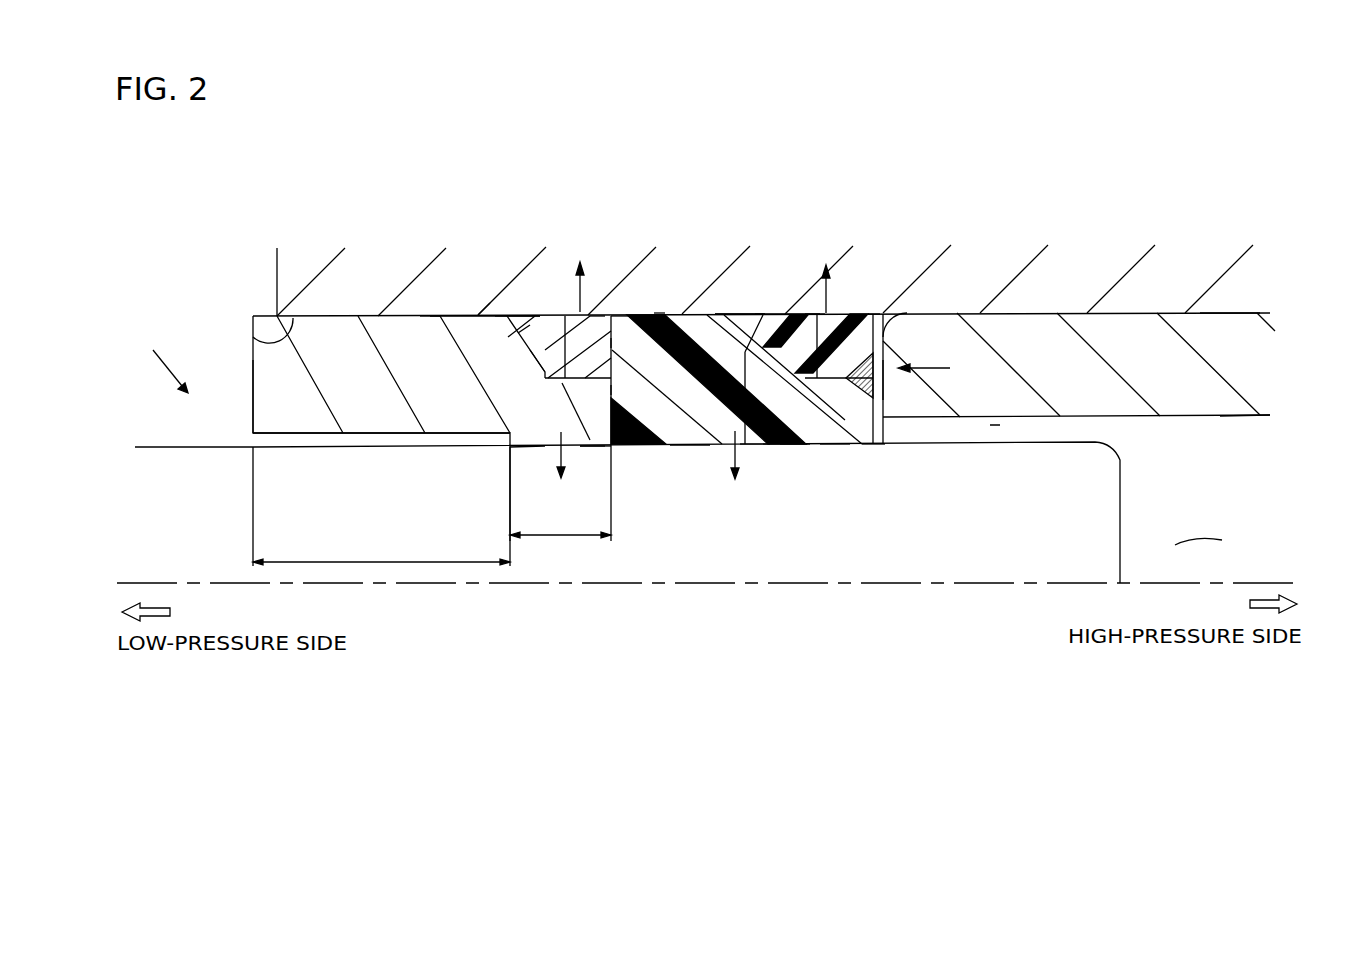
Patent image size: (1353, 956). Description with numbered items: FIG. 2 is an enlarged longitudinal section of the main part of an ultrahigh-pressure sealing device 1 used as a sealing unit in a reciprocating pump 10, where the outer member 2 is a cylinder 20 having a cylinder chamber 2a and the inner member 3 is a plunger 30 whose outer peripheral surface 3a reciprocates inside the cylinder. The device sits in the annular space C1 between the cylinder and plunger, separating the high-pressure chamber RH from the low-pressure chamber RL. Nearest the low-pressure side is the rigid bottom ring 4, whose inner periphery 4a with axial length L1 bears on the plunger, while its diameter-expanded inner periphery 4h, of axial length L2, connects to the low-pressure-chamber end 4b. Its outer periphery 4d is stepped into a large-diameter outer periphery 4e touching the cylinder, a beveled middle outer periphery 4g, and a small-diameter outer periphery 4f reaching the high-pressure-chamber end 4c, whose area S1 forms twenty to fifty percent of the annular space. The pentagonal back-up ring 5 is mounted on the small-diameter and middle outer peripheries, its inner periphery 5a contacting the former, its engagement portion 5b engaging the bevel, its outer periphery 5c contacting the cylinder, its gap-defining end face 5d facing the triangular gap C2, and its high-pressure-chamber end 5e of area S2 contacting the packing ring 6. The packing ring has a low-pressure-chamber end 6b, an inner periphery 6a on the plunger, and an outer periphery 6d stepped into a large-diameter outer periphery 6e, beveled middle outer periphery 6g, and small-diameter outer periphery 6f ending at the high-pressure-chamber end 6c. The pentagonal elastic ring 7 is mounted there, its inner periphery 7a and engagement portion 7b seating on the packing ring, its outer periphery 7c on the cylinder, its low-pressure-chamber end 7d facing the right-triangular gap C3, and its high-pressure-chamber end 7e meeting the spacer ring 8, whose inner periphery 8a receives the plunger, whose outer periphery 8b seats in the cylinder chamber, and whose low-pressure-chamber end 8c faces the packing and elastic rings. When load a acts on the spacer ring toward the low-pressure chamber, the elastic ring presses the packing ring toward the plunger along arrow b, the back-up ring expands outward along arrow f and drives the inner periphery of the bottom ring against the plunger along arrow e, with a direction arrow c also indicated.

The ultrahigh-pressure sealing device 1 is at (1138, 173).
The reciprocating pump 10 is at (1110, 199).
The outer member 2 is at (736, 280).
The cylinder 20 is at (274, 268).
The cylinder chamber 2a is at (252, 330).
The inner member 3 is at (708, 512).
The plunger 30 is at (1122, 494).
The outer peripheral surface 3a is at (153, 447).
The bottom ring 4 is at (340, 306).
The inner periphery 4a is at (533, 448).
The low-pressure-chamber end 4b is at (252, 367).
The high-pressure-chamber end 4c is at (630, 450).
The outer periphery 4d is at (533, 196).
The large-diameter outer periphery 4e is at (430, 313).
The small-diameter outer periphery 4f is at (502, 313).
The middle outer periphery 4g is at (528, 313).
The diameter-expanded inner periphery 4h is at (378, 436).
The back-up ring 5 is at (563, 305).
The inner periphery 5a is at (582, 380).
The engagement portion 5b is at (545, 373).
The outer periphery 5c is at (598, 313).
The gap-defining end face 5d is at (534, 360).
The high-pressure-chamber end 5e is at (622, 313).
The packing ring 6 is at (654, 313).
The inner periphery 6a is at (688, 446).
The low-pressure-chamber end 6b is at (592, 446).
The high-pressure-chamber end 6c is at (877, 446).
The outer periphery 6d is at (720, 196).
The large-diameter outer periphery 6e is at (728, 313).
The small-diameter outer periphery 6f is at (817, 313).
The middle outer periphery 6g is at (748, 313).
The elastic ring 7 is at (843, 311).
The inner periphery 7a is at (835, 446).
The engagement portion 7b is at (795, 446).
The outer periphery 7c is at (873, 313).
The low-pressure-chamber end 7d is at (755, 446).
The high-pressure-chamber end 7e is at (907, 313).
The spacer ring 8 is at (1200, 419).
The inner periphery 8a is at (1243, 419).
The outer periphery 8b is at (1230, 311).
The low-pressure-chamber end 8c is at (885, 393).
The annular space C1 is at (885, 360).
The gap C2 is at (530, 325).
The gap C3 is at (758, 313).
The area of high-pressure-chamber end of bottom ring S1 is at (612, 389).
The area of high-pressure-chamber end of back-up ring S2 is at (613, 340).
The axial length L1 is at (560, 494).
The axial length L2 is at (381, 506).
The load a is at (932, 370).
The arrow b is at (735, 468).
The direction arrow c is at (826, 278).
The arrow e is at (560, 467).
The arrow f is at (580, 274).
The low-pressure chamber RL is at (167, 362).
The high-pressure chamber RH is at (1215, 537).